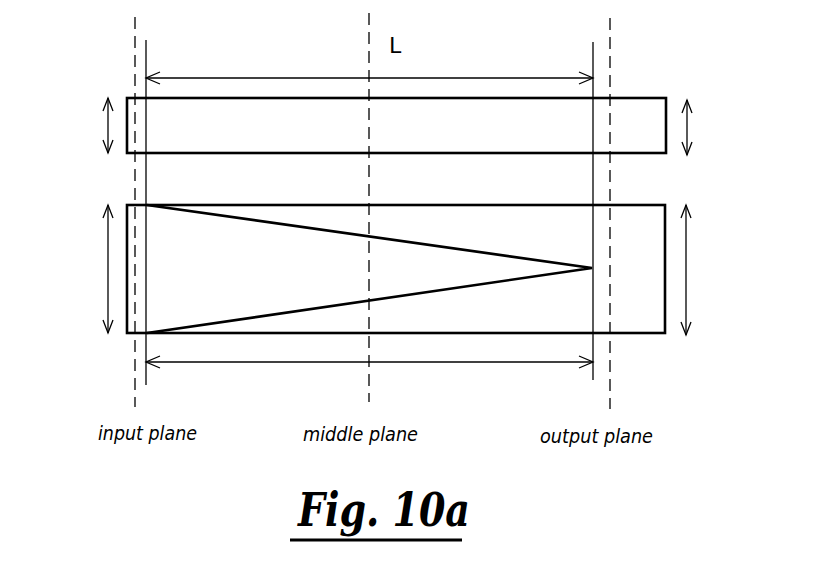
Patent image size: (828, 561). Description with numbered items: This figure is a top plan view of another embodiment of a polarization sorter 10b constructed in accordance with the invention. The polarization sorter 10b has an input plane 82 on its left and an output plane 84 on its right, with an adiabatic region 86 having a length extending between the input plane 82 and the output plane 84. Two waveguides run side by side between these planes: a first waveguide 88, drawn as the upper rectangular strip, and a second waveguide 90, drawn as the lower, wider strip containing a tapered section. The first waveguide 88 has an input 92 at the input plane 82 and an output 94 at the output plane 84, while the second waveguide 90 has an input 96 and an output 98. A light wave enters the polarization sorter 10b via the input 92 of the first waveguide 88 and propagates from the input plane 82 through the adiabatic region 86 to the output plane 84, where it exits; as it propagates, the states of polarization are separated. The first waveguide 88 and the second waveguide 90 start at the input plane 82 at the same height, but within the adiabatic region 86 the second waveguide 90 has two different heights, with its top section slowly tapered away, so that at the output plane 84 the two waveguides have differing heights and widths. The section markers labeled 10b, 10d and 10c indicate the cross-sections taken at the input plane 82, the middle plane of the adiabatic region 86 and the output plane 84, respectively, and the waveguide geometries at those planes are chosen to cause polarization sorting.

The input plane 82 is at (146, 377).
The output plane 84 is at (593, 377).
The adiabatic region 86 is at (248, 364).
The first waveguide 88 is at (132, 96).
The second waveguide 90 is at (128, 334).
The input of the first waveguide 92 is at (126, 118).
The output of the first waveguide 94 is at (667, 118).
The input of the second waveguide 96 is at (123, 222).
The output of the second waveguide 98 is at (667, 225).
The polarization sorter 10b is at (135, 17).
The section line 10c (output plane cross-section) 10c is at (610, 18).
The section line 10d (middle plane cross-section) 10d is at (369, 13).